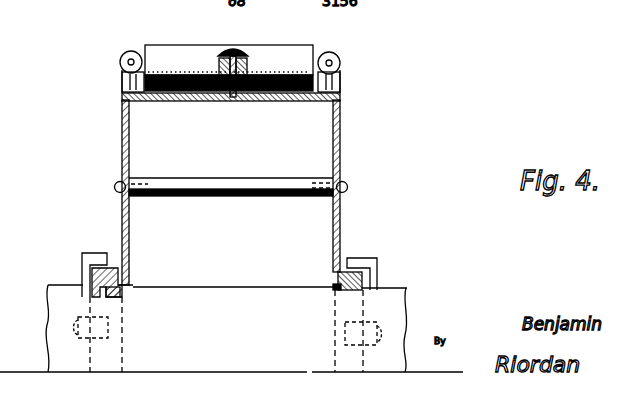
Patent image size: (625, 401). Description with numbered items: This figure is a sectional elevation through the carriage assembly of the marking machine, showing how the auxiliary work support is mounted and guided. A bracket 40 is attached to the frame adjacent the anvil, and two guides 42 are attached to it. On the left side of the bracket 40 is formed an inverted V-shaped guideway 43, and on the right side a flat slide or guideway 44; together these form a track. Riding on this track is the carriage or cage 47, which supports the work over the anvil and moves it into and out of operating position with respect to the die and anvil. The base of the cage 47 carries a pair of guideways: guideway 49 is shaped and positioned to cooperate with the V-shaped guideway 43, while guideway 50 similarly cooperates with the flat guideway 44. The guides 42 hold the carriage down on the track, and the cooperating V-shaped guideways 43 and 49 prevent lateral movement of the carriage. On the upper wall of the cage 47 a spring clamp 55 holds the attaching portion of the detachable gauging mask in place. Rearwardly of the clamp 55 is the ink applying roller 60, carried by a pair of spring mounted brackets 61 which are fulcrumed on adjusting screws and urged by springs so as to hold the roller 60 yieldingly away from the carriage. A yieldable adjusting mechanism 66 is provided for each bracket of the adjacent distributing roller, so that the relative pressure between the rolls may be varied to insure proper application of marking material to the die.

The bracket 40 is at (385, 300).
The guides 42 is at (83, 253).
The inverted V-shaped guideway 43 is at (114, 297).
The flat slide or guideway 44 is at (347, 292).
The carriage or cage 47 is at (122, 139).
The carriage guideway 49 is at (107, 267).
The carriage guideway 50 is at (343, 272).
The spring clamp 55 is at (250, 54).
The ink applying roller 60 is at (172, 53).
The spring mounted brackets 61 is at (122, 76).
The yieldable adjusting mechanism 66 is at (120, 61).